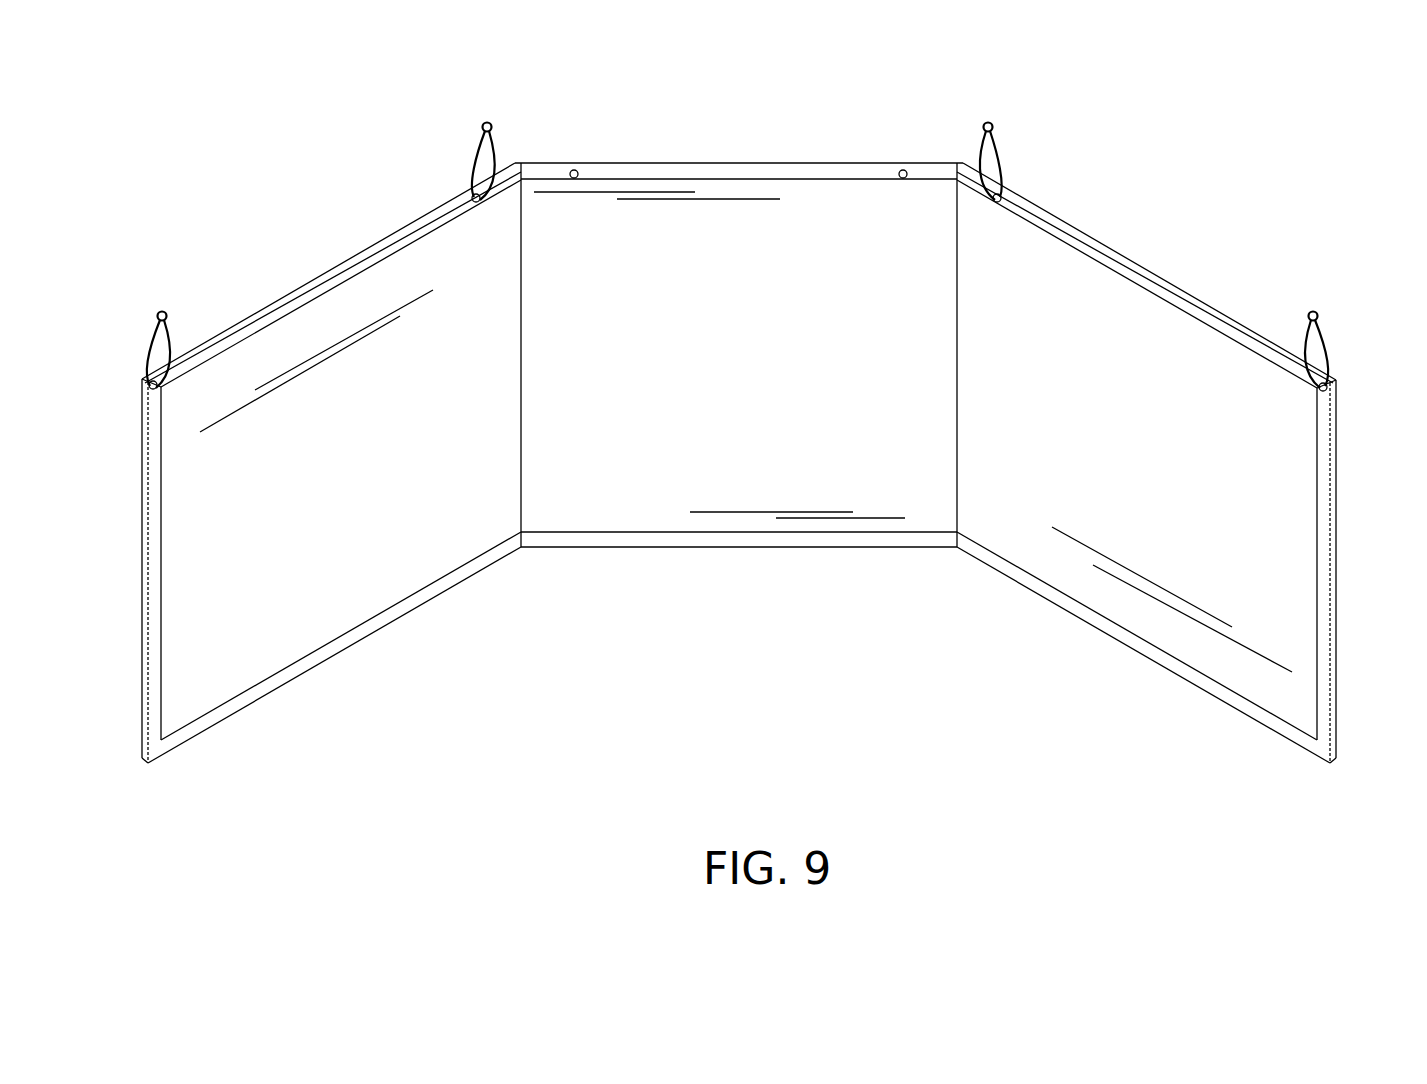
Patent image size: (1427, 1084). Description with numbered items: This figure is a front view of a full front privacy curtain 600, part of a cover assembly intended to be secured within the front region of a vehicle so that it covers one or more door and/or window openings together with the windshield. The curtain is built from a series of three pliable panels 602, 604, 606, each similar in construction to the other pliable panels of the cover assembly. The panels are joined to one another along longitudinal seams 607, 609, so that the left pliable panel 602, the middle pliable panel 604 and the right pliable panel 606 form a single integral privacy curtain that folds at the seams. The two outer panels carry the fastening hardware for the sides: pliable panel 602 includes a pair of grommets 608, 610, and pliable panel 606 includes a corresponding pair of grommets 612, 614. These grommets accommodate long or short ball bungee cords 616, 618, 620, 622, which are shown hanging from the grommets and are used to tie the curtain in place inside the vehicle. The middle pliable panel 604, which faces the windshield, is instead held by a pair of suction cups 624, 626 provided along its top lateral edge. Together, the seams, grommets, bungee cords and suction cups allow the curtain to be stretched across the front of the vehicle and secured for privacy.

The full front privacy curtain 600 is at (740, 110).
The pliable panel 602 is at (291, 292).
The middle pliable panel 604 is at (630, 162).
The pliable panel 606 is at (1153, 268).
The longitudinal seam 607 is at (528, 408).
The longitudinal seam 609 is at (950, 322).
The grommet 608 is at (150, 393).
The grommet 610 is at (470, 195).
The grommet 612 is at (1004, 192).
The grommet 614 is at (1328, 392).
The suction cup 624 is at (586, 168).
The suction cup 626 is at (905, 160).
The ball bungee cord 616 is at (152, 352).
The ball bungee cord 618 is at (492, 135).
The ball bungee cord 620 is at (998, 155).
The ball bungee cord 622 is at (1310, 350).